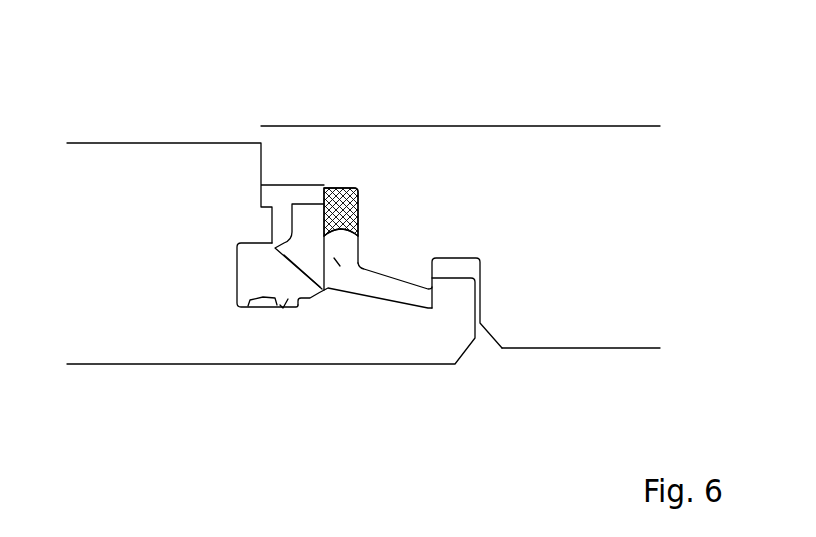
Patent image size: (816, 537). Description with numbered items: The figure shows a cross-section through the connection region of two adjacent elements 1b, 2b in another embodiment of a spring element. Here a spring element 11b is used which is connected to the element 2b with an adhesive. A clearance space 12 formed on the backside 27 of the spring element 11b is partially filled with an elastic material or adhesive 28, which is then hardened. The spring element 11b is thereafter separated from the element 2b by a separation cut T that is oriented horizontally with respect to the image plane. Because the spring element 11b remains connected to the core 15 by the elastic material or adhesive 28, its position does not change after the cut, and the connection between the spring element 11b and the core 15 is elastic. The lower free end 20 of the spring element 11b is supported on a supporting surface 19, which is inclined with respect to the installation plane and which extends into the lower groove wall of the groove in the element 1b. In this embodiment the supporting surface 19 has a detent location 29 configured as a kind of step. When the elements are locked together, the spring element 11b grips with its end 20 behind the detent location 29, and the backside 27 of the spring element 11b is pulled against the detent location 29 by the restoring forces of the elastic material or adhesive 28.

The element 1b is at (158, 173).
The element 2b is at (583, 155).
The spring element 11b is at (292, 249).
The clearance space 12 is at (347, 262).
The core 15 is at (603, 221).
The supporting surface 19 is at (247, 311).
The lower free end 20 is at (315, 273).
The backside 27 is at (325, 252).
The elastic material or adhesive 28 is at (343, 190).
The detent location 29 is at (305, 300).
The separation cut T is at (305, 196).